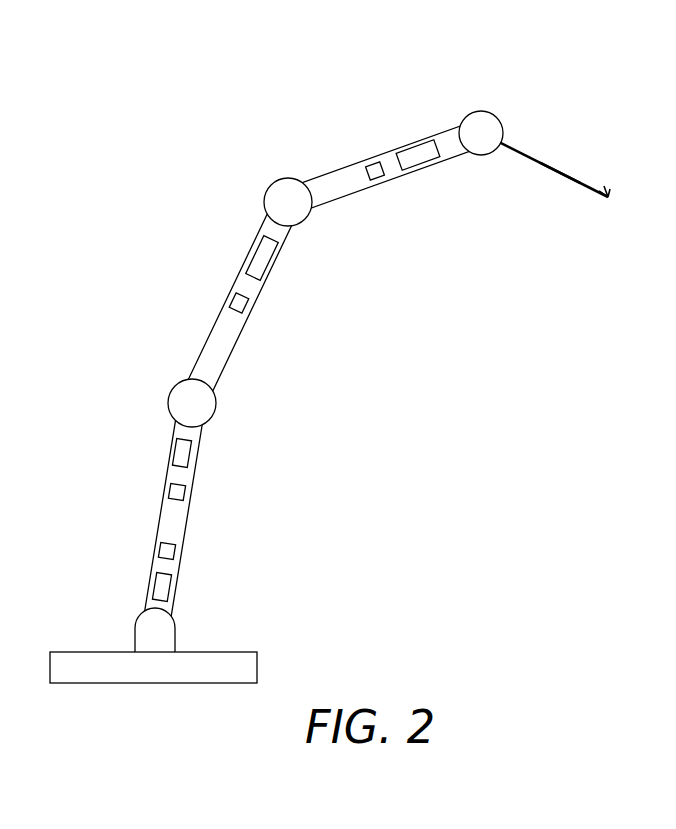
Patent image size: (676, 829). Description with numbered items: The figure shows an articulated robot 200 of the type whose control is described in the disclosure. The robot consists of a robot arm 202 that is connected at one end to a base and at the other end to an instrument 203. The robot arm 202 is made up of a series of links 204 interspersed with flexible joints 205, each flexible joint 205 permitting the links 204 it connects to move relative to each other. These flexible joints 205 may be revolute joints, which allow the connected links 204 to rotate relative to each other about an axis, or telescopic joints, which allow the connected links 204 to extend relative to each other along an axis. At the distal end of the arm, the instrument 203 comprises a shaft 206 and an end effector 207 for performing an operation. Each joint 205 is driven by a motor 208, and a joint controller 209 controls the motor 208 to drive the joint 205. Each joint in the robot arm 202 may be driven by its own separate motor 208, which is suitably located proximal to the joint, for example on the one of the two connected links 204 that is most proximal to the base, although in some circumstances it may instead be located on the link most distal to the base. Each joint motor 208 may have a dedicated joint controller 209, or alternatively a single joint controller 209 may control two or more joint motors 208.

The robot 200 is at (183, 104).
The robot arm 202 is at (423, 426).
The instrument 203 is at (545, 165).
The link 204 is at (345, 173).
The flexible joint 205 is at (283, 193).
The shaft 206 is at (575, 182).
The end effector 207 is at (612, 200).
The motor 208 is at (420, 160).
The joint controller 209 is at (377, 180).